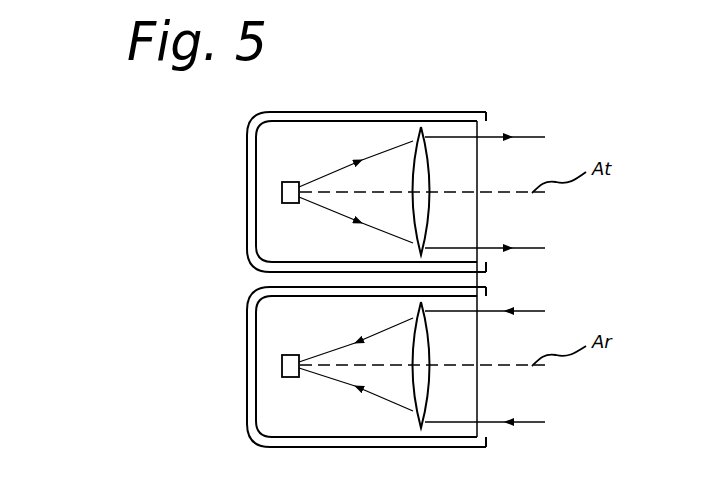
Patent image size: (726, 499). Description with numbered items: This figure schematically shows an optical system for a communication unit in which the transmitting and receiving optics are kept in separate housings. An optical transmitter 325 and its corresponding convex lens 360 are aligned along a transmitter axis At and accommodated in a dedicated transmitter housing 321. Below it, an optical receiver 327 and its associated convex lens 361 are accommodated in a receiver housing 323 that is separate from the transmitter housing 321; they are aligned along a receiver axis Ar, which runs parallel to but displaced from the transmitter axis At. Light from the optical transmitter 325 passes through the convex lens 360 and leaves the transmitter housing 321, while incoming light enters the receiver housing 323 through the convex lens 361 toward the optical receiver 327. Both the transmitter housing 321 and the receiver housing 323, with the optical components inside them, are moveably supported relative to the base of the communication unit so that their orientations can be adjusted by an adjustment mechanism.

The transmitter housing 321 is at (309, 117).
The receiver housing 323 is at (335, 447).
The optical transmitter 325 is at (283, 190).
The optical receiver 327 is at (283, 364).
The convex lens 360 is at (430, 157).
The convex lens 361 is at (421, 405).